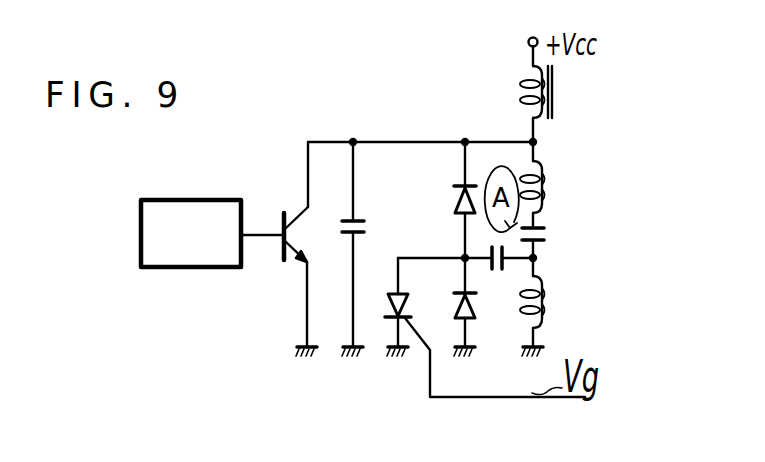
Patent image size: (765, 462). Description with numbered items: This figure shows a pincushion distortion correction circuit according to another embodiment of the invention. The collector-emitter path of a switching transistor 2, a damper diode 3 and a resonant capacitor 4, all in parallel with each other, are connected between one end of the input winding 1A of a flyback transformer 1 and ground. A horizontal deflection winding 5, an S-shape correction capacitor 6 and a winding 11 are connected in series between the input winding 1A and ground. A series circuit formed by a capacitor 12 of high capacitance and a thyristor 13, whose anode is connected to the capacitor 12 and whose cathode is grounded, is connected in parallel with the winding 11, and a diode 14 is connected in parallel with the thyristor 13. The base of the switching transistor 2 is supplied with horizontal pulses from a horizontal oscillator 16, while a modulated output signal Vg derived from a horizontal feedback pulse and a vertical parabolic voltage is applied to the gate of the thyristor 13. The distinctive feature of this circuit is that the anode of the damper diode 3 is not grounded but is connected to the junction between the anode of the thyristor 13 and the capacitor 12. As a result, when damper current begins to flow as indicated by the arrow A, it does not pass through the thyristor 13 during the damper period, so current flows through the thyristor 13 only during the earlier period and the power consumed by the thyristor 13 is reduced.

The flyback transformer 1 is at (553, 98).
The input winding 1A is at (522, 90).
The switching transistor 2 is at (282, 262).
The damper diode 3 is at (454, 200).
The resonant capacitor 4 is at (348, 240).
The horizontal deflection winding 5 is at (543, 186).
The S-shape correction capacitor 6 is at (545, 236).
The winding 11 is at (545, 305).
The capacitor 12 is at (536, 261).
The thyristor 13 is at (409, 300).
The diode 14 is at (476, 310).
The horizontal oscillator 16 is at (192, 270).